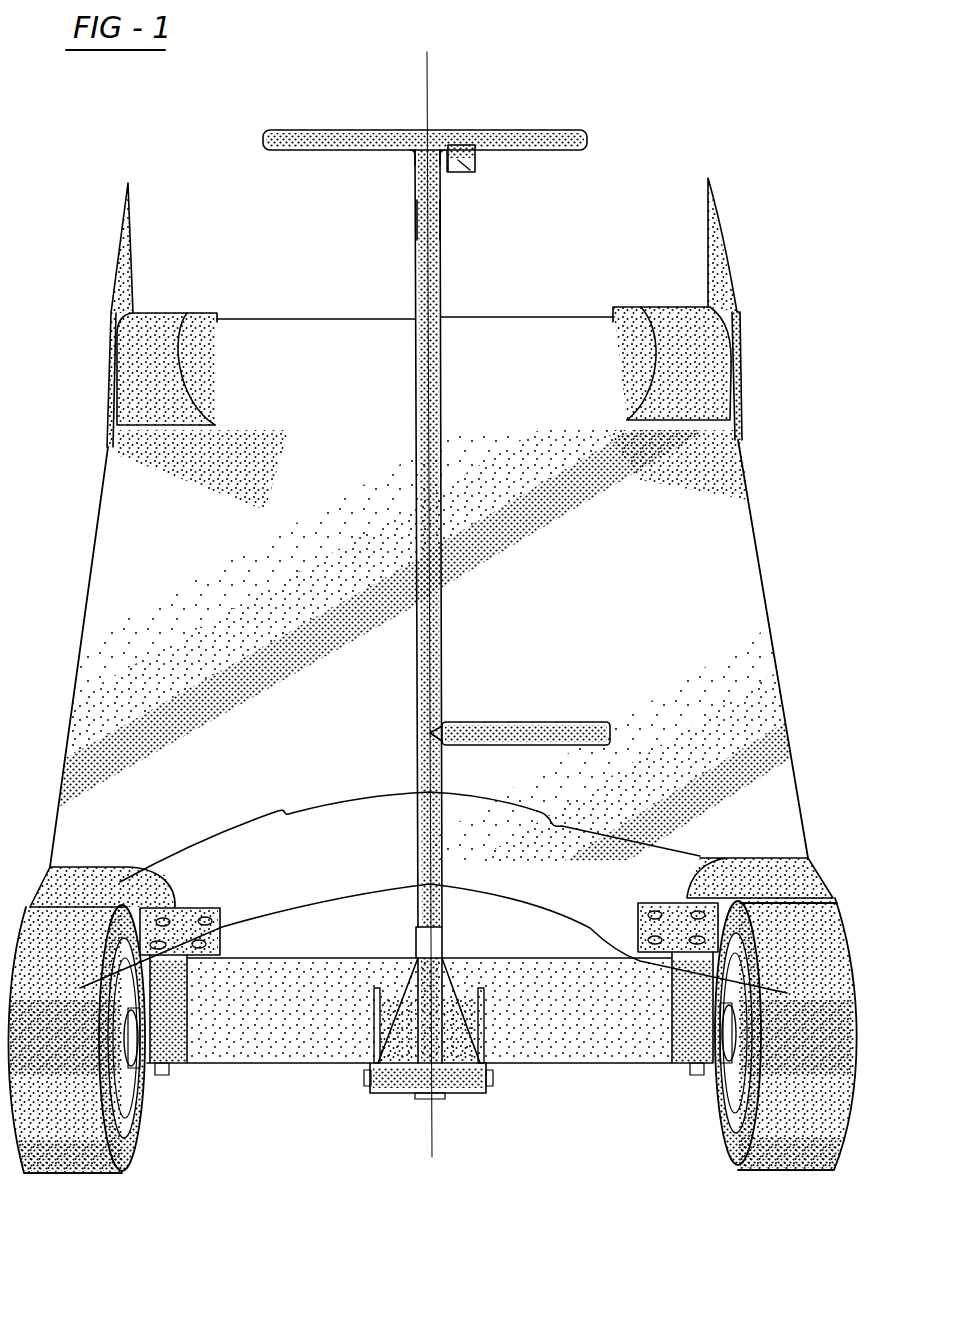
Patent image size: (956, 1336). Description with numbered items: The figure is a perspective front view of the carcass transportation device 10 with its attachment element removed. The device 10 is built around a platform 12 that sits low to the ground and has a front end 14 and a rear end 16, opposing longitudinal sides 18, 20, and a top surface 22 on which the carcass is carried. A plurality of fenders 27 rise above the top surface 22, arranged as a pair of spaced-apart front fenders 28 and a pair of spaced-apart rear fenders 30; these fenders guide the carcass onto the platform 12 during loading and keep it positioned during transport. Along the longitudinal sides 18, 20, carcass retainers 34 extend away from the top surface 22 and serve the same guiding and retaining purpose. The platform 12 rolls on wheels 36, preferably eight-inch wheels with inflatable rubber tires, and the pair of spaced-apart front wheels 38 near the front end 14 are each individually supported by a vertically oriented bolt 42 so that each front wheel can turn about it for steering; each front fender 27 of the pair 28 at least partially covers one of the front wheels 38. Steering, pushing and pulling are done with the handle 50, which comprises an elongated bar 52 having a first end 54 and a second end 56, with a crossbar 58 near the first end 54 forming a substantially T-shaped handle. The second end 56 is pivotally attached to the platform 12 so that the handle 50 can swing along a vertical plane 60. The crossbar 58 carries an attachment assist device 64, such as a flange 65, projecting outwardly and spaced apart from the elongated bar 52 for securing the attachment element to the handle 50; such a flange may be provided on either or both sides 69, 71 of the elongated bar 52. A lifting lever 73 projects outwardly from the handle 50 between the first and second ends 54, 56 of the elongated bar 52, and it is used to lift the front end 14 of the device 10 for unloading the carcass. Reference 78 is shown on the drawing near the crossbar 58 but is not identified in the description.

The carcass transportation device 10 is at (628, 110).
The platform 12 is at (722, 492).
The front end 14 is at (316, 1074).
The rear end 16 is at (233, 272).
The longitudinal side 18 is at (86, 496).
The longitudinal side 20 is at (766, 544).
The top surface 22 is at (334, 423).
The fender 27 is at (161, 320).
The front fenders 28 is at (410, 833).
The rear fenders 30 is at (183, 392).
The carcass retainers 34 is at (126, 290).
The wheels 36 is at (70, 1107).
The front wheels 38 is at (433, 932).
The vertically oriented bolt 42 is at (162, 934).
The handle 50 is at (460, 636).
The elongated bar 52 is at (441, 450).
The first end 54 is at (398, 172).
The second end 56 is at (392, 974).
The crossbar 58 is at (316, 130).
The vertical plane 60 is at (432, 92).
The attachment assist device 64 is at (490, 162).
The flange 65 is at (472, 172).
The side 69 is at (415, 222).
The side 71 is at (441, 221).
The lifting lever 73 is at (556, 725).
The grip 78 is at (397, 130).